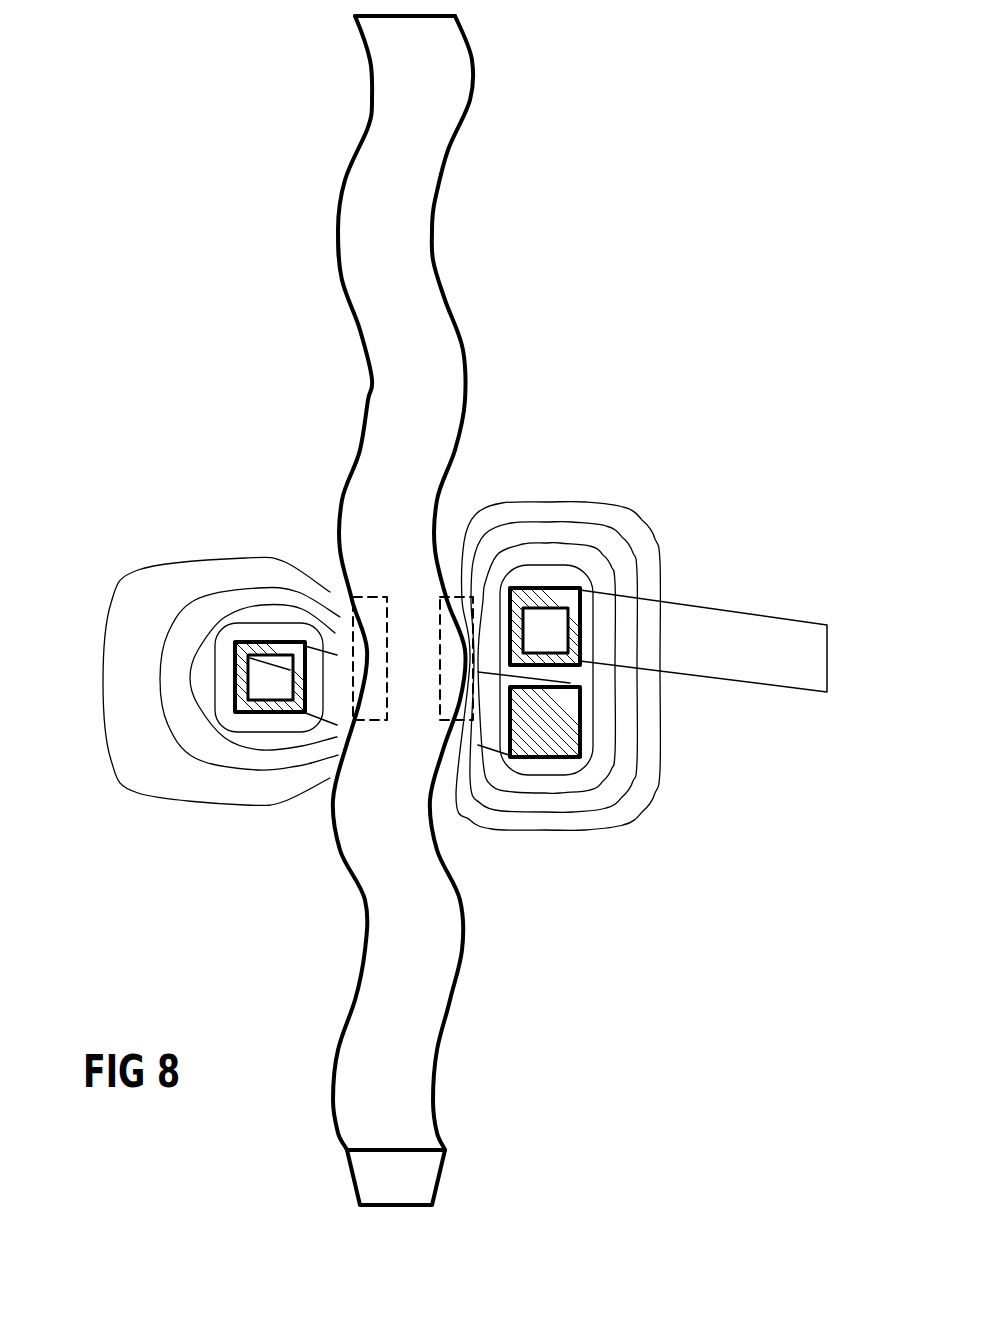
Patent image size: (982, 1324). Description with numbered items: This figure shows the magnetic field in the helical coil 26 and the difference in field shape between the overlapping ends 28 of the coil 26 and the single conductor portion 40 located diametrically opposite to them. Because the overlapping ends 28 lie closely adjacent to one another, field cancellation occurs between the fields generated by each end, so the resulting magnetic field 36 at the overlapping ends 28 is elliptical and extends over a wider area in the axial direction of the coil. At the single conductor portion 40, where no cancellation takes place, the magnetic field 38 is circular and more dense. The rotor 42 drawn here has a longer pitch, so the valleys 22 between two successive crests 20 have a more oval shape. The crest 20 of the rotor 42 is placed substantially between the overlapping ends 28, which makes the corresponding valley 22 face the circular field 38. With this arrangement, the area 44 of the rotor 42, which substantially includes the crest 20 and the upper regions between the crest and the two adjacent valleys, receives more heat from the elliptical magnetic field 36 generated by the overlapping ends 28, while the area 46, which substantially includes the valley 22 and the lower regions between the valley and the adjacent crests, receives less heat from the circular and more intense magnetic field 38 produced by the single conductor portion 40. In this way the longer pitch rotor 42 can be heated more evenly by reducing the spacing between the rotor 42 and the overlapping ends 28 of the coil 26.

The crest 20 is at (468, 115).
The valley 22 is at (373, 105).
The coil 26 is at (767, 655).
The overlapping ends 28 is at (553, 642).
The magnetic field 36 is at (623, 562).
The magnetic field 38 is at (233, 560).
The single conductor portion 40 is at (263, 692).
The rotor 42 is at (390, 1048).
The area 44 is at (470, 828).
The area 46 is at (367, 720).